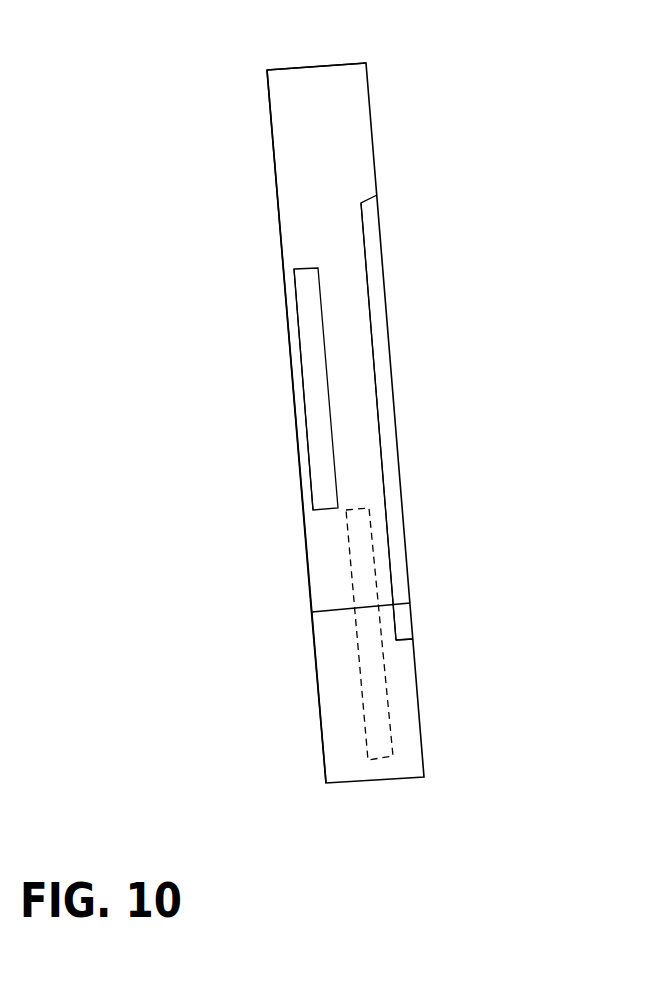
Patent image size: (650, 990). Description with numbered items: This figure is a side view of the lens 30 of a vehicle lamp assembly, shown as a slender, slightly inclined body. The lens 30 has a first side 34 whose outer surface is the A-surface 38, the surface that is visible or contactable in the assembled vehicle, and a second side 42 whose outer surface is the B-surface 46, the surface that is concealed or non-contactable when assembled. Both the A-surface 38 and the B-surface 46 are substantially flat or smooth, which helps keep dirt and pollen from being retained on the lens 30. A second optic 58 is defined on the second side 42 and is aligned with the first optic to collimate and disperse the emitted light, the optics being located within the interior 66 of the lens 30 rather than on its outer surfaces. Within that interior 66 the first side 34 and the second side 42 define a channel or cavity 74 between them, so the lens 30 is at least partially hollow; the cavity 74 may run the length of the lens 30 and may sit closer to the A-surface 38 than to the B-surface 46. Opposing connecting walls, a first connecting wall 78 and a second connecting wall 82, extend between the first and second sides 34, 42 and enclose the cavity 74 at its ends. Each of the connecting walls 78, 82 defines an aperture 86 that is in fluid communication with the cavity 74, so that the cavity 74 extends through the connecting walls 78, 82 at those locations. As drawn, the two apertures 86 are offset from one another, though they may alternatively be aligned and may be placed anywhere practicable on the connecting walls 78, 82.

The lens 30 is at (337, 62).
The first side 34 is at (305, 538).
The A-surface 38 is at (278, 207).
The second side 42 is at (415, 660).
The B-surface 46 is at (377, 172).
The second optic 58 is at (380, 366).
The interior 66 is at (303, 95).
The cavity 74 is at (322, 473).
The first connecting wall 78 is at (332, 145).
The second connecting wall 82 is at (410, 745).
The aperture 86 is at (302, 357).